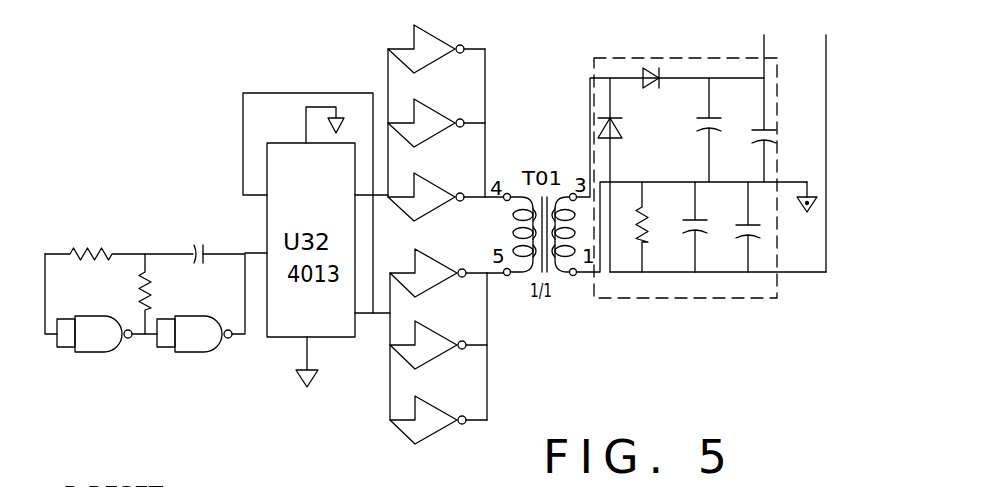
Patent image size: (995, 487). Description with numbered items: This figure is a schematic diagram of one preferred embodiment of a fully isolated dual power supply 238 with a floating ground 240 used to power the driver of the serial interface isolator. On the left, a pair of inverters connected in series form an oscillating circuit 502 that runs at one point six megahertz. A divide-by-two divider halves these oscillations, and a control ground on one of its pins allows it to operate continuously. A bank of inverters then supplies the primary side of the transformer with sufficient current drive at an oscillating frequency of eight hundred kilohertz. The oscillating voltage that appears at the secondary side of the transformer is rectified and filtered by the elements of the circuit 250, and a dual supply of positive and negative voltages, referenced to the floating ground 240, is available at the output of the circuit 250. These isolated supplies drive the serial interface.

The oscillating circuit 502 is at (228, 295).
The fully isolated dual power supply 238 is at (580, 63).
The floating ground 240 is at (806, 213).
The circuit 250 is at (680, 298).